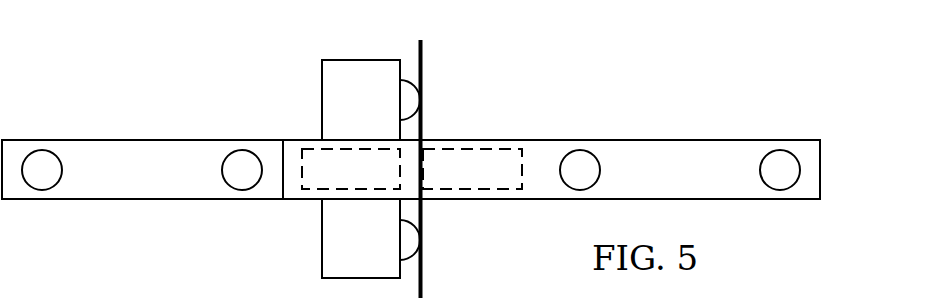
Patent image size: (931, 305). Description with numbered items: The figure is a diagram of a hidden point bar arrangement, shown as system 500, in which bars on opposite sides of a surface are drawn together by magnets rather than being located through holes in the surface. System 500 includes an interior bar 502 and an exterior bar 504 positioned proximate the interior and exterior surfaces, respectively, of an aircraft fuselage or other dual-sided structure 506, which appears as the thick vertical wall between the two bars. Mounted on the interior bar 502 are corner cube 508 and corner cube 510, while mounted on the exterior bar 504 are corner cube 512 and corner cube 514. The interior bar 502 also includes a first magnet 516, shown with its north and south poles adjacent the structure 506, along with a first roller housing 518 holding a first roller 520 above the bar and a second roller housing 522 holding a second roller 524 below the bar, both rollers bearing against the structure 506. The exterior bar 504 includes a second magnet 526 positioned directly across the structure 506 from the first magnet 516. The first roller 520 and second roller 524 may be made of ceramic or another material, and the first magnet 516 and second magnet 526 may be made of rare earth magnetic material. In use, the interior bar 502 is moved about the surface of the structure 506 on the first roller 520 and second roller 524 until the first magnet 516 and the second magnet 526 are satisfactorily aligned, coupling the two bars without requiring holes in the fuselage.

The system 500 is at (188, 58).
The interior bar 502 is at (142, 140).
The exterior bar 504 is at (658, 140).
The dual-sided structure 506 is at (423, 270).
The corner cube 508 is at (62, 172).
The corner cube 510 is at (222, 166).
The corner cube 512 is at (600, 170).
The corner cube 514 is at (760, 168).
The first magnet 516 is at (350, 148).
The first roller housing 518 is at (322, 80).
The first roller 520 is at (408, 100).
The second roller housing 522 is at (322, 260).
The second roller 524 is at (408, 240).
The second magnet 526 is at (470, 148).